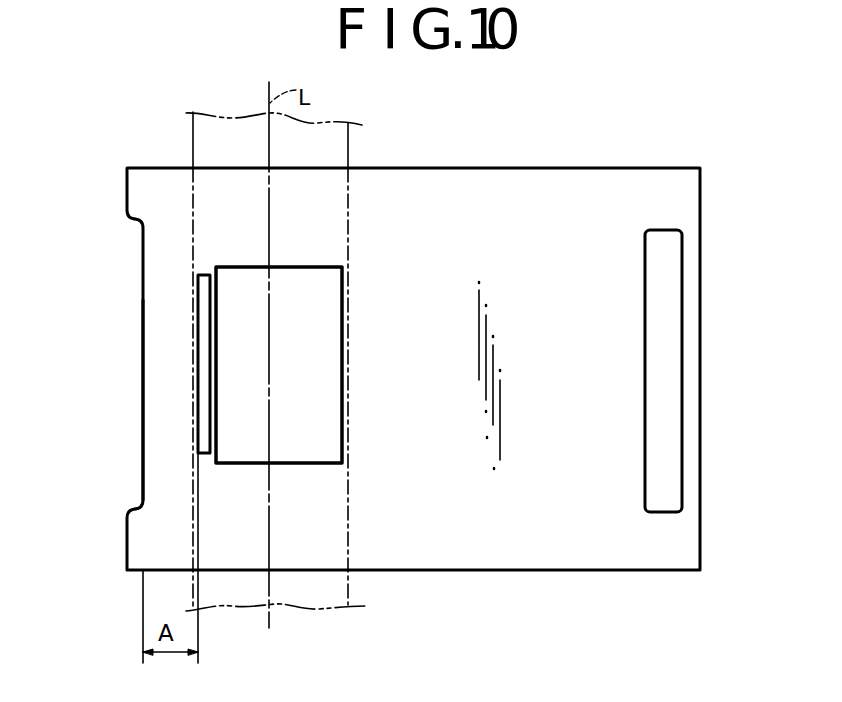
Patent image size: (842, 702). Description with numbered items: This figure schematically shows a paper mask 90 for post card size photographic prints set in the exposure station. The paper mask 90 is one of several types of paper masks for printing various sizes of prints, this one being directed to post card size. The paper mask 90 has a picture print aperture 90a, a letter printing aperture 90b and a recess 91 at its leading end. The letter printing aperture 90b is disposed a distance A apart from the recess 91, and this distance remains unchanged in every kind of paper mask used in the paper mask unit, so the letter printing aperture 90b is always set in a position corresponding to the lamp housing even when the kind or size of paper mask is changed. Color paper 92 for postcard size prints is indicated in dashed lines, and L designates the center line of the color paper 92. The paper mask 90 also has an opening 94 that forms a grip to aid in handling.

The paper mask 90 is at (432, 168).
The picture print aperture 90a is at (345, 346).
The letter printing aperture 90b is at (206, 316).
The recess 91 is at (143, 447).
The color paper 92 is at (348, 576).
The opening 94 is at (682, 341).